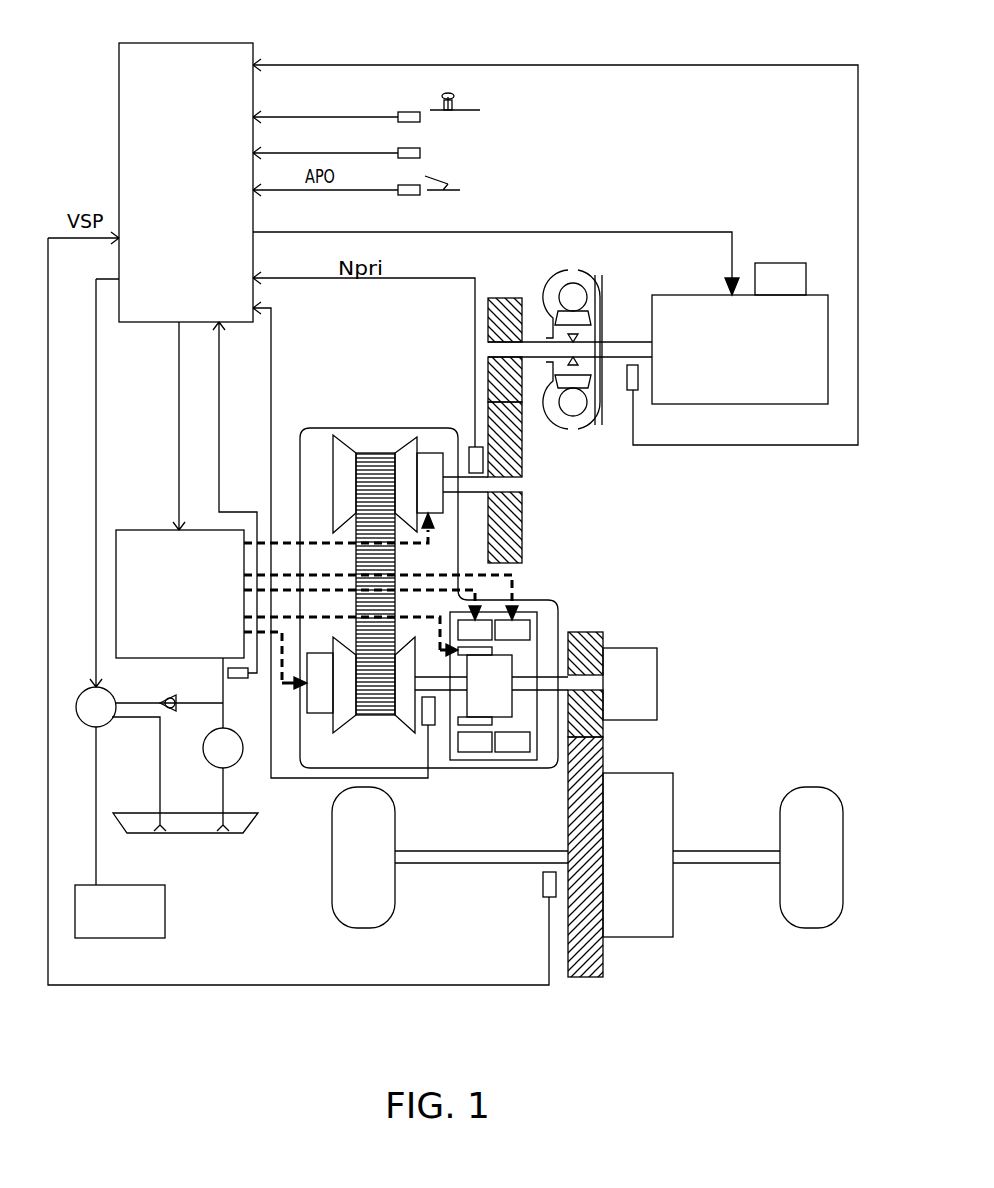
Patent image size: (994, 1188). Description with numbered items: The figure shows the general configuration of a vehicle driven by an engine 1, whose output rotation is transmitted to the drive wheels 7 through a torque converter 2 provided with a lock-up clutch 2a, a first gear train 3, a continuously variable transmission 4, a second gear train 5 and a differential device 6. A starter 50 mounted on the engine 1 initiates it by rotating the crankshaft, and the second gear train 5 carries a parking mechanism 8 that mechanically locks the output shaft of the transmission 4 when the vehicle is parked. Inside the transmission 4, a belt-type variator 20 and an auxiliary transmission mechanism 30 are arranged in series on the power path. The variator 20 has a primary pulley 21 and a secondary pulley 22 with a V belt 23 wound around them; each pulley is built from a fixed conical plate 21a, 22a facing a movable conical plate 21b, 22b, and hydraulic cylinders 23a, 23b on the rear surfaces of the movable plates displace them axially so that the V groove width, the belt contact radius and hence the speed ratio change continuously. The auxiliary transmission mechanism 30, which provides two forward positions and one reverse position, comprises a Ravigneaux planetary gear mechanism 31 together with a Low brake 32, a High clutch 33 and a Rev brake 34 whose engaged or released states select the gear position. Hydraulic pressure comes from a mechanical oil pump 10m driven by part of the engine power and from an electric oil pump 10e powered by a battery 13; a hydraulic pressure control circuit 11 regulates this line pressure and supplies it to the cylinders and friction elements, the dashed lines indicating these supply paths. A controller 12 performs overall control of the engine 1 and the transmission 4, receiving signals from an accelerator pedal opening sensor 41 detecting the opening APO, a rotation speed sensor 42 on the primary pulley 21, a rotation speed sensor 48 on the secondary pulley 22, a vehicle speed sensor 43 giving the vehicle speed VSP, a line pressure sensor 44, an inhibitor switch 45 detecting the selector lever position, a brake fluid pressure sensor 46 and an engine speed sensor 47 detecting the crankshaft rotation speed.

The engine 1 is at (803, 308).
The torque converter 2 is at (590, 305).
The lock-up clutch 2a is at (601, 326).
The first gear train 3 is at (502, 289).
The transmission 4 is at (449, 426).
The second gear train 5 is at (592, 991).
The differential device 6 is at (637, 925).
The drive wheels 7 is at (365, 915).
The parking mechanism 8 is at (640, 676).
The electric oil pump 10e is at (101, 722).
The mechanical oil pump 10m is at (216, 767).
The hydraulic pressure control circuit 11 is at (135, 533).
The controller 12 is at (241, 52).
The battery 13 is at (155, 924).
The variator 20 is at (319, 447).
The primary pulley 21 is at (358, 440).
The fixed conical plate 21a is at (342, 450).
The movable conical plate 21b is at (405, 455).
The secondary pulley 22 is at (381, 736).
The fixed conical plate 22a is at (405, 713).
The movable conical plate 22b is at (343, 716).
The V belt 23 is at (377, 452).
The hydraulic cylinder 23a is at (423, 478).
The hydraulic cylinder 23b is at (316, 706).
The auxiliary transmission mechanism 30 is at (545, 674).
The Ravigneaux planetary gear mechanism 31 is at (495, 680).
The Low brake 32 is at (478, 632).
The High clutch 33 is at (478, 723).
The Rev brake 34 is at (512, 632).
The accelerator pedal opening sensor 41 is at (409, 195).
The rotation speed sensor 42 is at (471, 447).
The vehicle speed sensor 43 is at (543, 888).
The line pressure sensor 44 is at (240, 680).
The inhibitor switch 45 is at (408, 113).
The brake fluid pressure sensor 46 is at (405, 157).
The engine speed sensor 47 is at (631, 392).
The rotation speed sensor 48 is at (435, 712).
The starter 50 is at (763, 272).